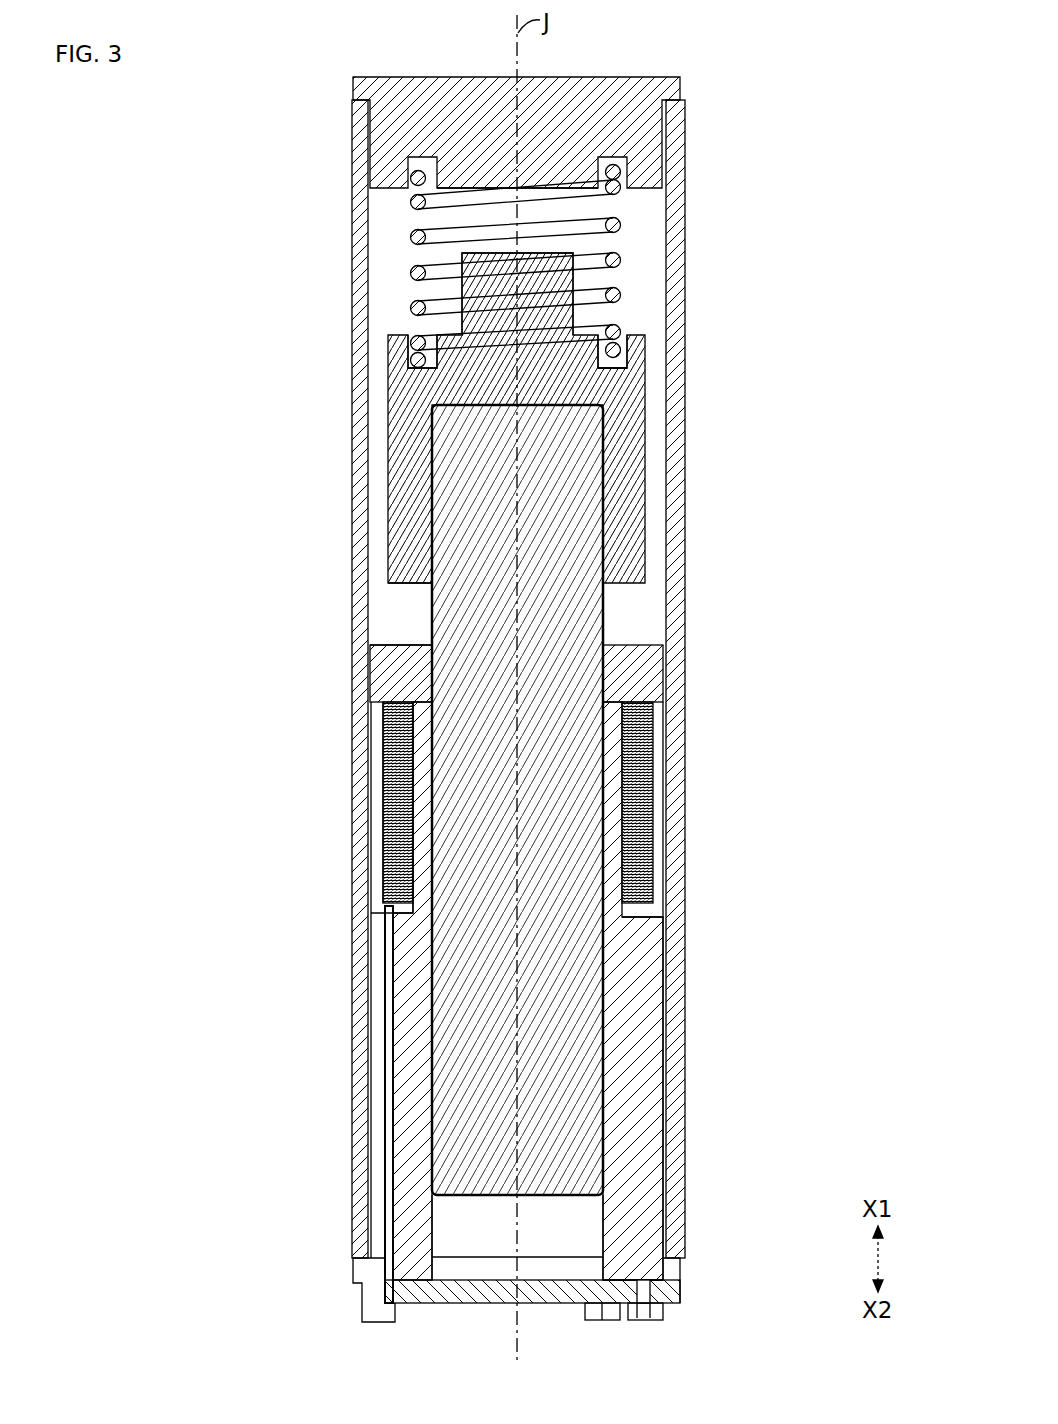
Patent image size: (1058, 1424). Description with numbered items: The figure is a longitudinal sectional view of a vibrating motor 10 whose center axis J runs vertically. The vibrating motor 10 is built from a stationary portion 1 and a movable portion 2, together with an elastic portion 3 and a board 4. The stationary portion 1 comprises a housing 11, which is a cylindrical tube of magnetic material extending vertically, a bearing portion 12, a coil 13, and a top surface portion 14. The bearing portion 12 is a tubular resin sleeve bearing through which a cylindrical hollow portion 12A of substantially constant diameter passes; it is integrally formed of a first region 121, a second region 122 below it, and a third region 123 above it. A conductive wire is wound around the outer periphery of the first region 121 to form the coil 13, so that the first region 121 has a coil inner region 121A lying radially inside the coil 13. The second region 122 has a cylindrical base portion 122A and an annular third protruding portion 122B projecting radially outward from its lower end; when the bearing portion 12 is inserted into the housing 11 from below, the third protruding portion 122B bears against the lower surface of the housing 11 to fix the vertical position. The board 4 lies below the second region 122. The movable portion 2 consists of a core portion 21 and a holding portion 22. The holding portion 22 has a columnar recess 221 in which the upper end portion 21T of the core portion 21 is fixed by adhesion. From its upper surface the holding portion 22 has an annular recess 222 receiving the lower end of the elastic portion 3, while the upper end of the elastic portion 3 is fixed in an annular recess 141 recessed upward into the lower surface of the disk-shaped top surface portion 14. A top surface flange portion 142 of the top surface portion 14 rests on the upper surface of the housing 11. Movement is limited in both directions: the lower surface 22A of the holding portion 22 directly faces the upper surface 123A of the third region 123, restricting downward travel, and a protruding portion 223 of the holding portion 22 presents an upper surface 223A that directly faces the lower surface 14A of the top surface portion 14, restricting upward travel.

The vibrating motor 10 is at (698, 19).
The stationary portion 1 is at (169, 1000).
The housing 11 is at (375, 1128).
The bearing portion 12 is at (413, 982).
The hollow portion 12A is at (585, 1218).
The coil 13 is at (383, 797).
The top surface portion 14 is at (372, 180).
The lower surface of the top surface portion 14A is at (645, 210).
The annular recess 141 is at (648, 203).
The top surface flange portion 142 is at (676, 93).
The first region 121 is at (668, 913).
The coil inner region 121A is at (652, 773).
The second region 122 is at (668, 1278).
The base portion 122A is at (666, 1060).
The third protruding portion 122B is at (660, 1284).
The third region 123 is at (668, 647).
The upper surface of the third region 123A is at (385, 645).
The movable portion 2 is at (800, 523).
The core portion 21 is at (585, 628).
The upper end portion 21T is at (585, 442).
The columnar recess 221 is at (598, 577).
The holding portion 22 is at (625, 512).
The lower surface of the holding portion 22A is at (405, 585).
The annular recess 222 is at (648, 343).
The protruding portion 223 is at (636, 332).
The upper surface of the holding portion 223A is at (633, 256).
The elastic portion 3 is at (622, 288).
The board 4 is at (430, 1303).